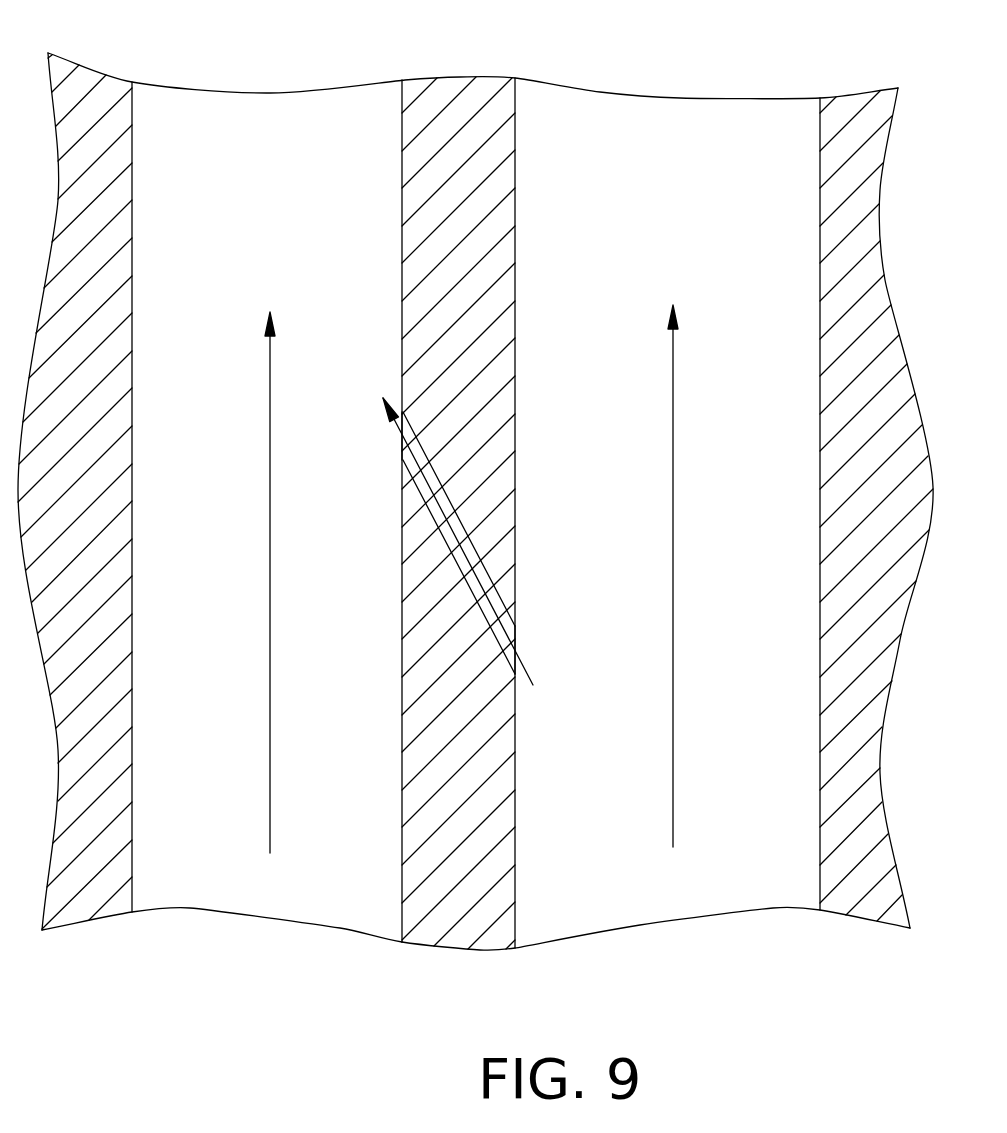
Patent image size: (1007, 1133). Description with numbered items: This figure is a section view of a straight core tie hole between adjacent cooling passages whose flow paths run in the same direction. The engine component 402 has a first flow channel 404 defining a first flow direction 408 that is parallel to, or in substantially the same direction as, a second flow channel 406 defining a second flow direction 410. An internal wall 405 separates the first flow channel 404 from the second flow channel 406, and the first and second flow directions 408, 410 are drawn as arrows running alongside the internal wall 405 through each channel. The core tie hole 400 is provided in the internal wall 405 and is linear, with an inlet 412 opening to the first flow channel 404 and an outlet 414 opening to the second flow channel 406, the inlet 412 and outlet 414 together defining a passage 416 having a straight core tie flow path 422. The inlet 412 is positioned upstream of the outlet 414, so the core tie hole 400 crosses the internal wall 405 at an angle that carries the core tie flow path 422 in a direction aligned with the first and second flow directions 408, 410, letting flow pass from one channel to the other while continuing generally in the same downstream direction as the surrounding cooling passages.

The core tie hole 400 is at (460, 513).
The engine component 402 is at (160, 43).
The first flow channel 404 is at (650, 905).
The internal wall 405 is at (435, 655).
The second flow channel 406 is at (313, 878).
The first flow direction 408 is at (673, 745).
The second flow direction 410 is at (271, 767).
The inlet 412 is at (515, 638).
The outlet 414 is at (402, 452).
The passage 416 is at (403, 537).
The core tie flow path 422 is at (485, 577).